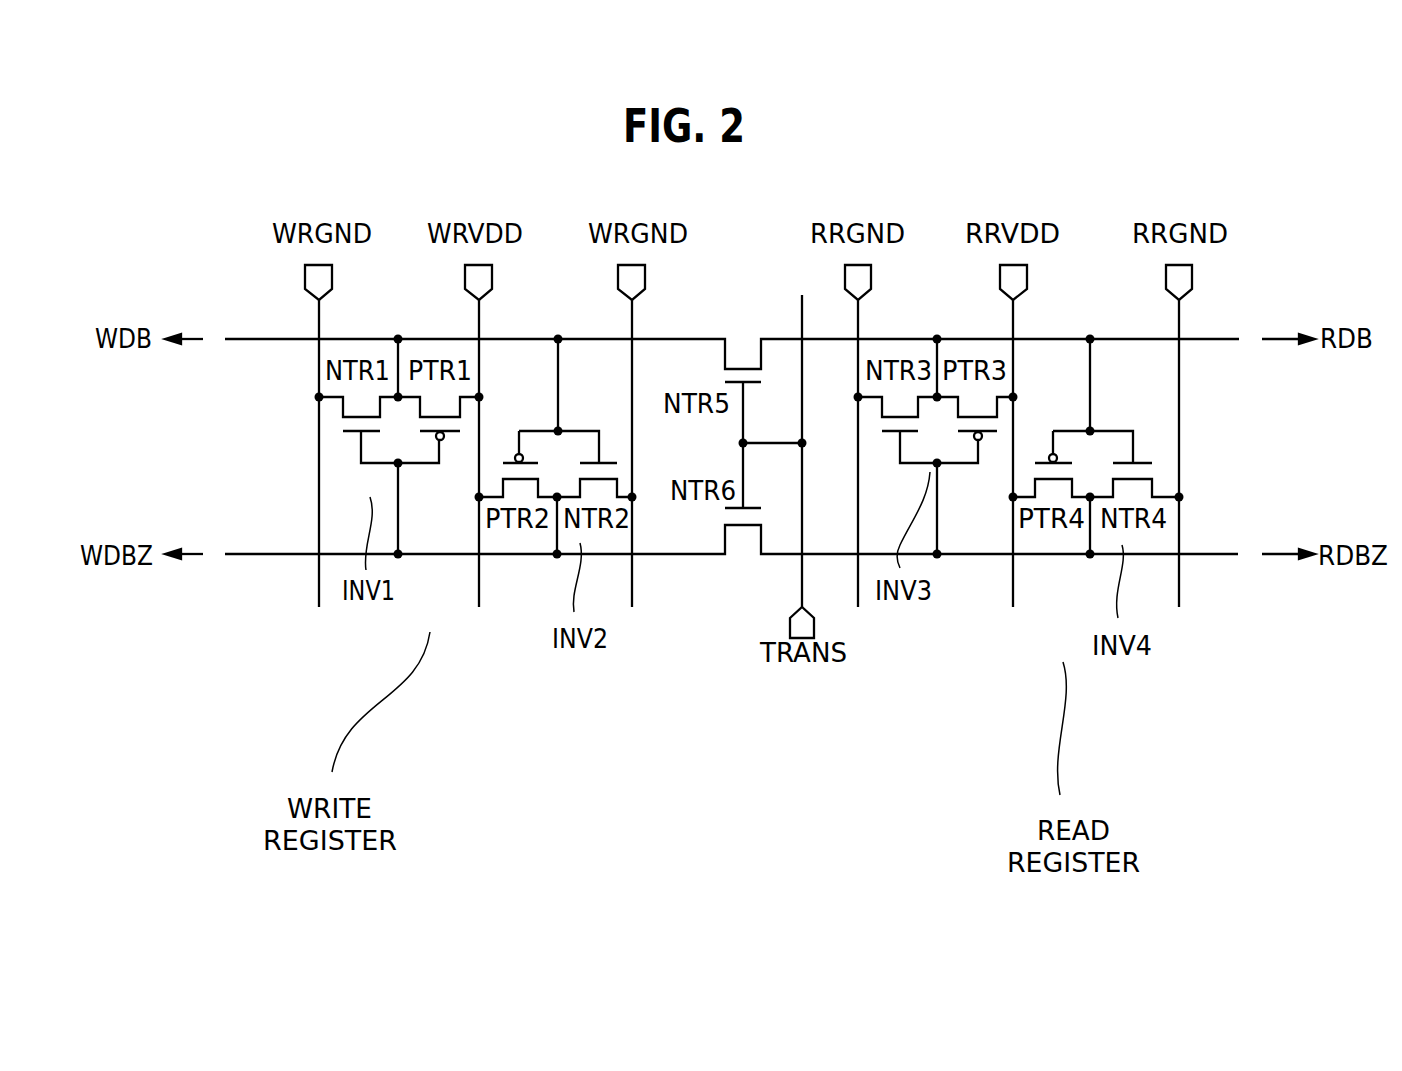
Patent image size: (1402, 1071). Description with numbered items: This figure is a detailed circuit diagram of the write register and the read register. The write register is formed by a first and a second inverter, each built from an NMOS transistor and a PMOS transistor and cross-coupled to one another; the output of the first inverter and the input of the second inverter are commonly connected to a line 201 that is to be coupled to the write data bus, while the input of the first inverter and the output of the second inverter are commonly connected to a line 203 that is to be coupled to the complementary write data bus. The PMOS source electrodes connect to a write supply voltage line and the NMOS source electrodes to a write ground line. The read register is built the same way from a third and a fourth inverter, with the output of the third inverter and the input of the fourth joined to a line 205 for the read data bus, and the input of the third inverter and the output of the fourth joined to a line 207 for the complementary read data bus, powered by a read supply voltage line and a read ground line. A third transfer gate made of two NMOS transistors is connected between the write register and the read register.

The line 201 is at (262, 339).
The line 203 is at (252, 554).
The line 205 is at (1230, 339).
The line 207 is at (1233, 557).